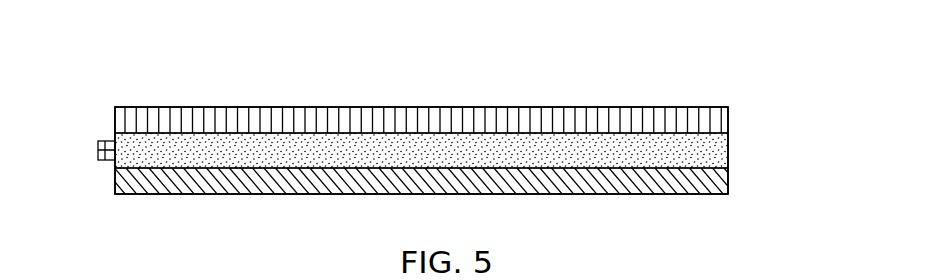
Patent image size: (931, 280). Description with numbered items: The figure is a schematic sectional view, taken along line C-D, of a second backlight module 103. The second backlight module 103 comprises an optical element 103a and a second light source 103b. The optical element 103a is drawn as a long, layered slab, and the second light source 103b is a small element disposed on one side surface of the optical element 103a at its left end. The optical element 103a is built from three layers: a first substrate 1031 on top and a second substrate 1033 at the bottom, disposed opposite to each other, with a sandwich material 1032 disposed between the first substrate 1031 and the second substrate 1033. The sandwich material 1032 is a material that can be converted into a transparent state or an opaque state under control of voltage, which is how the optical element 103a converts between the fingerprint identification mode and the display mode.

The second backlight module 103 is at (186, 83).
The optical element 103a is at (825, 112).
The first substrate 1031 is at (728, 122).
The sandwich material 1032 is at (728, 151).
The second substrate 1033 is at (728, 181).
The second light source 103b is at (97, 148).